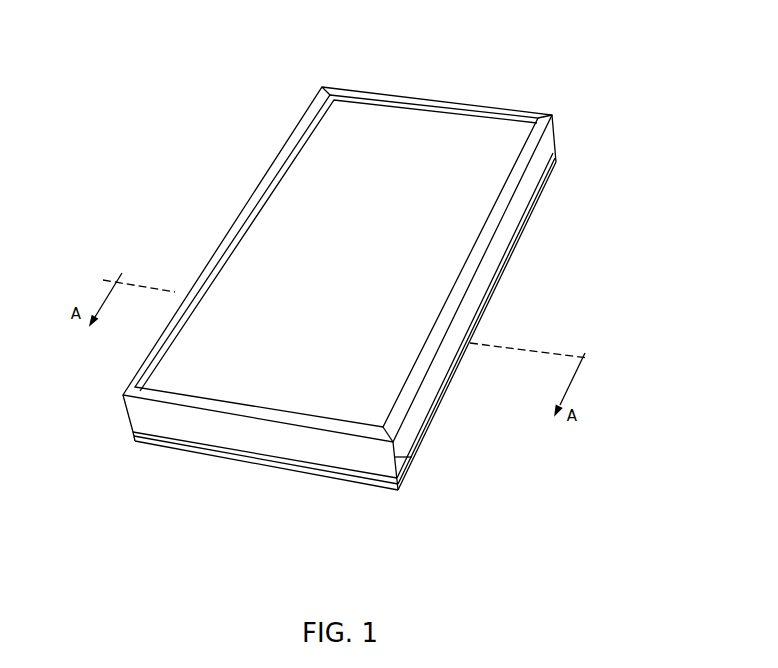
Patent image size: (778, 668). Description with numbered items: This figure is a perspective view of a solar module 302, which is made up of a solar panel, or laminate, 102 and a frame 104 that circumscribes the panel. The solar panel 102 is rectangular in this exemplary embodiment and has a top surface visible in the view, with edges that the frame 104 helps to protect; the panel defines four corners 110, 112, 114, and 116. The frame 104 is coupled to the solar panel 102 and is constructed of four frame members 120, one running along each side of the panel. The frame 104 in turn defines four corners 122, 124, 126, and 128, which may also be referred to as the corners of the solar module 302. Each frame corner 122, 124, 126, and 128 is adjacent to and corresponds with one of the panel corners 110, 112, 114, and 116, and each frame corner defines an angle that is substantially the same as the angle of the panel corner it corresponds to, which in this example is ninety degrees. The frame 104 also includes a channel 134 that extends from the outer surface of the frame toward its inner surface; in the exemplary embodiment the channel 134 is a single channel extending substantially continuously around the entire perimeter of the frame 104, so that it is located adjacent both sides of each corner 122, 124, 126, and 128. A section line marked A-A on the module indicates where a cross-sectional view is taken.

The solar module 302 is at (252, 63).
The solar panel 102 is at (452, 127).
The frame 104 is at (513, 247).
The corner 110 is at (122, 394).
The corner 112 is at (385, 427).
The corner 114 is at (333, 88).
The corner 116 is at (552, 114).
The frame member 120 is at (423, 98).
The corner 122 is at (130, 436).
The corner 124 is at (412, 458).
The corner 126 is at (320, 89).
The corner 128 is at (556, 154).
The channel 134 is at (495, 290).